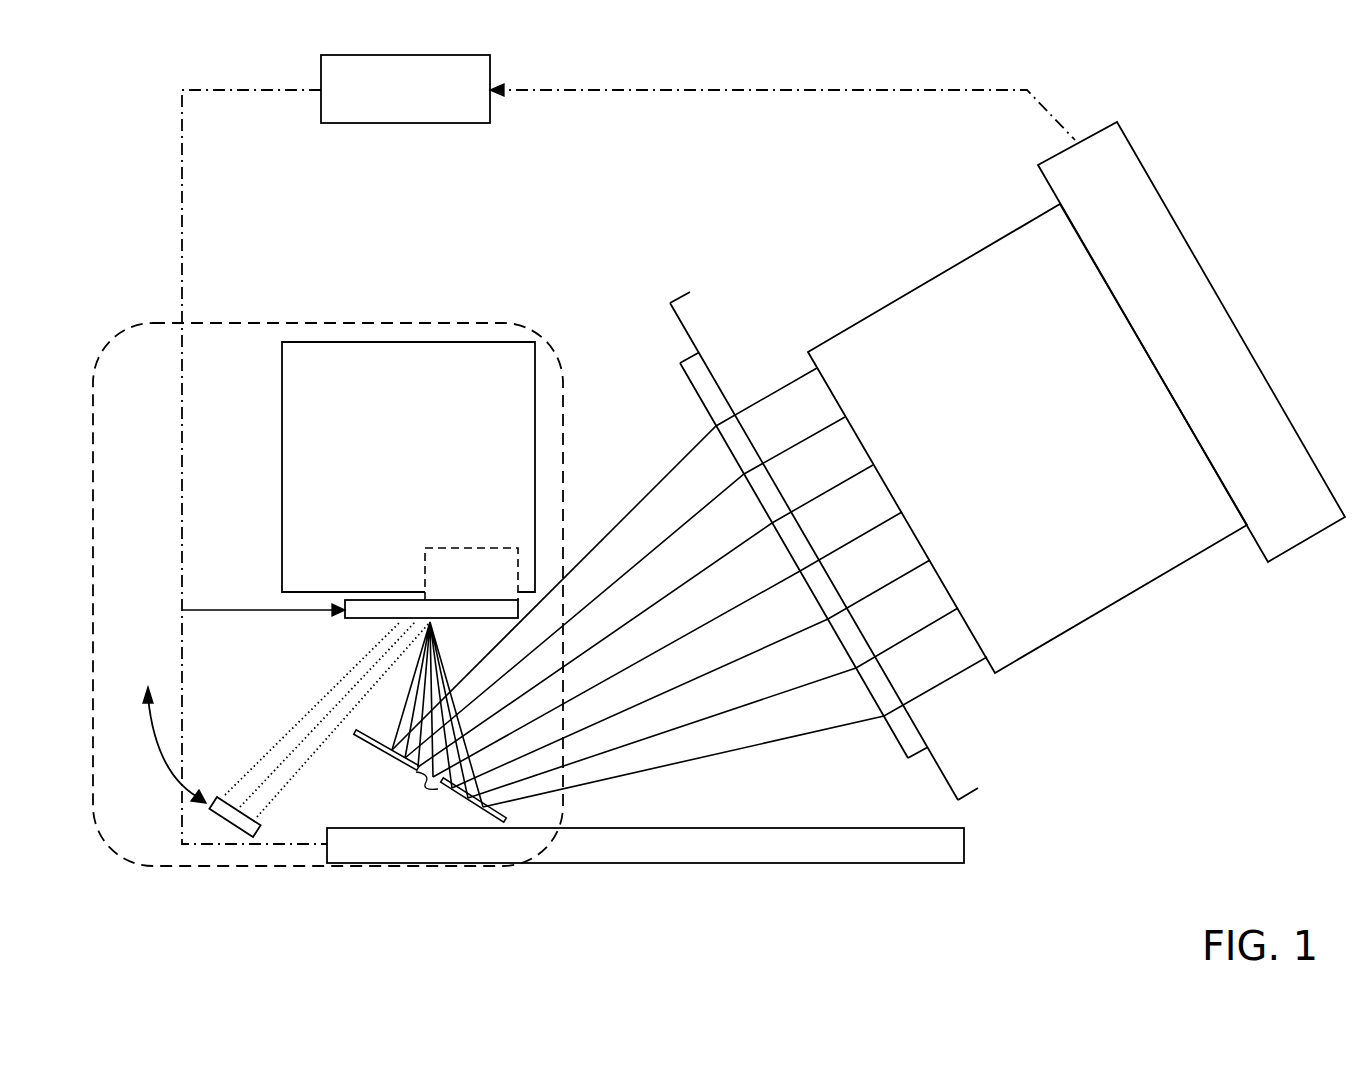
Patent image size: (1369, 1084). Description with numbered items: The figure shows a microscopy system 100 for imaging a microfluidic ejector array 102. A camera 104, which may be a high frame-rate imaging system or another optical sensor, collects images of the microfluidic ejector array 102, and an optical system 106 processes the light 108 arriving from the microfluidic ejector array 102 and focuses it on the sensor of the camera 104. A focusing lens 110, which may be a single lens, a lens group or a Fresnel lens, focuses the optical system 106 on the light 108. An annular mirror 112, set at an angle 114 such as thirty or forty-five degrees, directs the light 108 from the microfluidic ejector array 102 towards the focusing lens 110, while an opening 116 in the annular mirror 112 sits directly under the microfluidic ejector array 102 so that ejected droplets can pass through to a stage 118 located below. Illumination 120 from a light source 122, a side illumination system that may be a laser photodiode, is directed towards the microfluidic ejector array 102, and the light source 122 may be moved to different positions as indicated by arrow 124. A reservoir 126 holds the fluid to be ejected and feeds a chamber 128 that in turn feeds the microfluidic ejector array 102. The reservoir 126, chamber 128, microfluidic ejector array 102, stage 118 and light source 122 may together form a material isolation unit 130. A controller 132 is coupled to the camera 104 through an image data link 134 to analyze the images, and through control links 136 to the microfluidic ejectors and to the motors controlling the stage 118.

The microscopy system 100 is at (1280, 907).
The microfluidic ejector array 102 is at (457, 597).
The camera 104 is at (1093, 128).
The optical system 106 is at (895, 302).
The light 108 is at (453, 634).
The focusing lens 110 is at (693, 353).
The annular mirror 112 is at (507, 819).
The angle 114 is at (460, 803).
The opening 116 is at (418, 790).
The stage 118 is at (964, 845).
The illumination 120 is at (263, 759).
The light source 122 is at (228, 825).
The arrow 124 is at (167, 758).
The reservoir 126 is at (342, 342).
The chamber 128 is at (467, 547).
The material isolation unit 130 is at (120, 345).
The controller 132 is at (357, 125).
The image data link 134 is at (736, 92).
The control links 136 is at (249, 88).